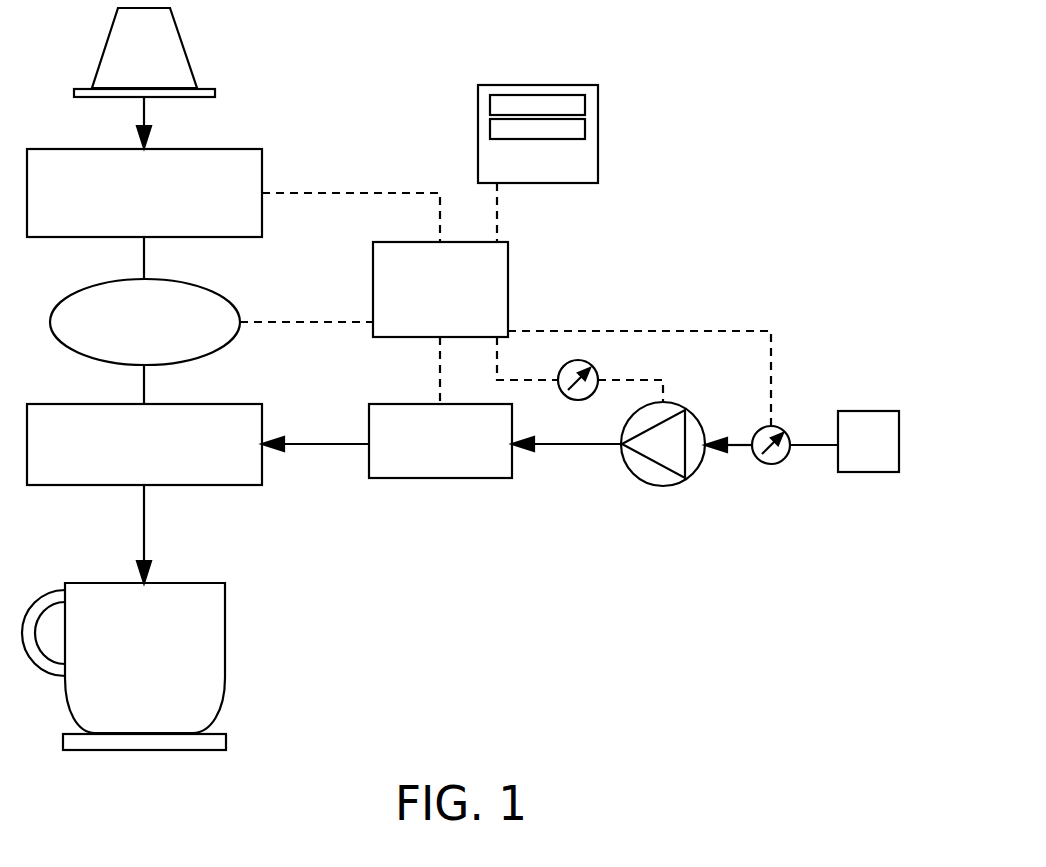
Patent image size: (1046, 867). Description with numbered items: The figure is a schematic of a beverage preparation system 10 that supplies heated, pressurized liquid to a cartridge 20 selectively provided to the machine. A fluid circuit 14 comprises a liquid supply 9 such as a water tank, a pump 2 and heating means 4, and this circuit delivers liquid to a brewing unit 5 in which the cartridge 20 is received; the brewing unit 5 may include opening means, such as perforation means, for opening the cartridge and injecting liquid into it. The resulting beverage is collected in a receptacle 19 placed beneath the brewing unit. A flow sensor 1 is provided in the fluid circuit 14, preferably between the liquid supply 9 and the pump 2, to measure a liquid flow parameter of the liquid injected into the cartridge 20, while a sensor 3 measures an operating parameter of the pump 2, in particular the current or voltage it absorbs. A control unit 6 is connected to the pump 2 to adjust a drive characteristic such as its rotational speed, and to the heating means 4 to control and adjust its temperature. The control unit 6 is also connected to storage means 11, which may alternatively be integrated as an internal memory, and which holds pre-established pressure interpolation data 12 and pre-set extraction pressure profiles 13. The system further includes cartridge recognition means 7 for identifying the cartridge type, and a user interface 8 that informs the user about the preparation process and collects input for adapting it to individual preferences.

The flow sensor 1 is at (771, 464).
The pump 2 is at (663, 487).
The sensor 3 is at (593, 366).
The heating means 4 is at (431, 456).
The brewing unit 5 is at (135, 460).
The control unit 6 is at (431, 312).
The cartridge recognition means 7 is at (135, 208).
The user interface 8 is at (136, 337).
The liquid supply 9 is at (857, 456).
The beverage preparation system 10 is at (708, 58).
The storage means 11 is at (528, 170).
The pre-established pressure interpolation data 12 is at (490, 103).
The pre-set extraction pressure profiles 13 is at (490, 128).
The fluid circuit 14 is at (320, 446).
The receptacle 19 is at (130, 664).
The cartridge 20 is at (130, 69).